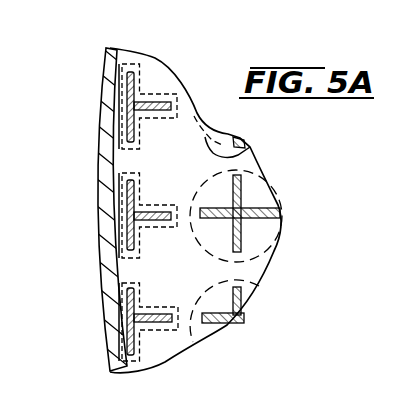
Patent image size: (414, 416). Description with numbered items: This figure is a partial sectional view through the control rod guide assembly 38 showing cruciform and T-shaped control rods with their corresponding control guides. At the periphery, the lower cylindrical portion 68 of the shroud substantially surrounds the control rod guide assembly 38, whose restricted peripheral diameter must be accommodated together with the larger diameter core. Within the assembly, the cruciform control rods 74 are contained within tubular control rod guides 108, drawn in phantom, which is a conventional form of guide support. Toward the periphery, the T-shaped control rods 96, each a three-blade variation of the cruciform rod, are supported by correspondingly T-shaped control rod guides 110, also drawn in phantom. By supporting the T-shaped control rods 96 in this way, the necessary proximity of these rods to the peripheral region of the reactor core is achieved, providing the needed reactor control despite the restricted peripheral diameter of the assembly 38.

The control rod guide assembly 38 is at (195, 76).
The lower cylindrical portion 68 is at (100, 153).
The cruciform control rod 74 is at (272, 191).
The T-shaped control rod 96 is at (123, 117).
The tubular control rod guide 108 is at (248, 158).
The T-shaped control rod guide 110 is at (125, 55).